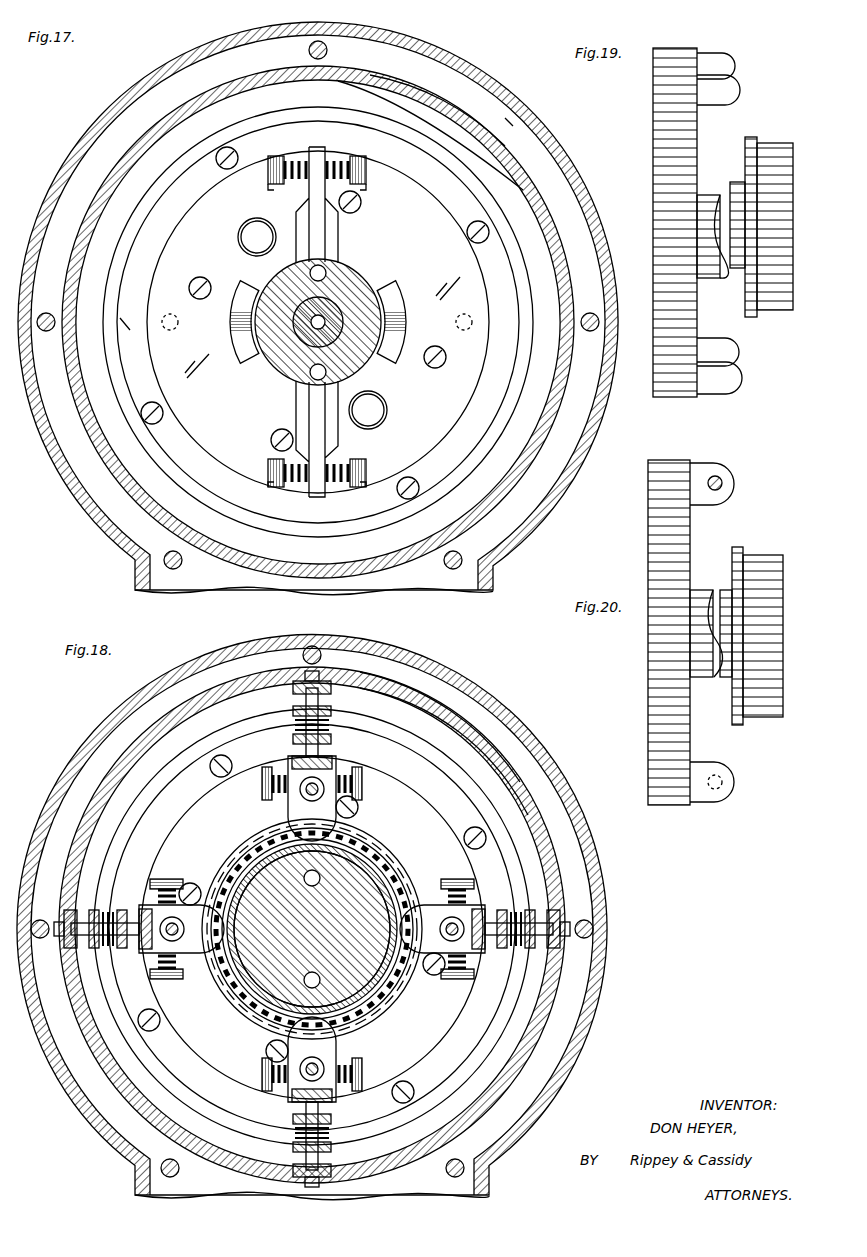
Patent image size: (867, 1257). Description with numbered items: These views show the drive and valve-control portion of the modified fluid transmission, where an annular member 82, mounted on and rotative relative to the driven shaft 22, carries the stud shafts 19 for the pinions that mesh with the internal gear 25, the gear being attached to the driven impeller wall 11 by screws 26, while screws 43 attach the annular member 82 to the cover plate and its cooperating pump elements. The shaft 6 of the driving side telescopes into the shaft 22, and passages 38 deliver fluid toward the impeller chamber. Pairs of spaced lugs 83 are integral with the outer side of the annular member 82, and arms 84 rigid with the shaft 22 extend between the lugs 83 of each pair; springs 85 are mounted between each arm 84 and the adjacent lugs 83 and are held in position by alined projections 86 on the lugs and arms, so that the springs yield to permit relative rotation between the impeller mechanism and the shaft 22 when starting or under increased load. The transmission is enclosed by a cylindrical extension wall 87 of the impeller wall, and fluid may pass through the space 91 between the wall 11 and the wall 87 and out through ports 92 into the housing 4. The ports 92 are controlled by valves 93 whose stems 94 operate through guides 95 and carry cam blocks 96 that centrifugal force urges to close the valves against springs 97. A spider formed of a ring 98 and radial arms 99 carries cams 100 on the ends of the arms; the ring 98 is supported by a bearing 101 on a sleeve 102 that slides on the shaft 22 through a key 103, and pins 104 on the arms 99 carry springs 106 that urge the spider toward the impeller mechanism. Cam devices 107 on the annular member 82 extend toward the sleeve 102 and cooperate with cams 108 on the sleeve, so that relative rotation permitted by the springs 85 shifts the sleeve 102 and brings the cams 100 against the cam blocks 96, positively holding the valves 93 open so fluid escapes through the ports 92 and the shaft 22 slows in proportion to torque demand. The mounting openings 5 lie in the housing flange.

In FIG. 17, the housing 4 is at (462, 70).
In FIG. 18, the housing 4 is at (500, 700).
In FIG. 17, the mounting hole 5 is at (329, 48).
In FIG. 18, the mounting hole 5 is at (596, 931).
In FIG. 17, the shaft 6 is at (332, 314).
In FIG. 17, the driven impeller wall 11 is at (542, 270).
In FIG. 18, the driven impeller wall 11 is at (520, 1030).
In FIG. 17, the stud shafts 19 is at (240, 236).
In FIG. 17, the shaft 22 is at (372, 303).
In FIG. 18, the shaft 22 is at (380, 975).
In FIG. 17, the internal gear 25 is at (497, 313).
In FIG. 18, the internal gear 25 is at (480, 1110).
In FIG. 17, the screws 26 is at (490, 235).
In FIG. 18, the screws 26 is at (410, 1102).
In FIG. 17, the passages 38 is at (322, 272).
In FIG. 18, the passages 38 is at (322, 878).
In FIG. 17, the screws 43 is at (201, 277).
In FIG. 18, the screws 43 is at (446, 965).
In FIG. 17, the annular member 82 is at (472, 290).
In FIG. 18, the annular member 82 is at (440, 1040).
In FIG. 19, the annular member 82 is at (662, 150).
In FIG. 20, the annular member 82 is at (656, 550).
In FIG. 17, the lugs 83 is at (270, 188).
In FIG. 18, the lugs 83 is at (262, 788).
In FIG. 19, the lugs 83 is at (738, 88).
In FIG. 20, the lugs 83 is at (736, 484).
In FIG. 17, the arms 84 is at (327, 231).
In FIG. 17, the springs 85 is at (296, 161).
In FIG. 18, the springs 85 is at (300, 770).
In FIG. 17, the projections 86 is at (268, 176).
In FIG. 17, the cylindrical extension wall 87 is at (505, 146).
In FIG. 18, the cylindrical extension wall 87 is at (520, 782).
In FIG. 17, the space 91 is at (525, 190).
In FIG. 18, the space 91 is at (528, 815).
In FIG. 18, the ports 92 is at (322, 690).
In FIG. 18, the valves 93 is at (322, 680).
In FIG. 18, the valve stems 94 is at (306, 712).
In FIG. 18, the guides 95 is at (335, 712).
In FIG. 18, the cam blocks 96 is at (305, 740).
In FIG. 18, the springs 97 is at (325, 720).
In FIG. 18, the ring 98 is at (228, 990).
In FIG. 18, the radial arms 99 is at (360, 809).
In FIG. 18, the cams 100 is at (340, 760).
In FIG. 18, the bearing 101 is at (382, 872).
In FIG. 18, the sleeve 102 is at (392, 884).
In FIG. 19, the sleeve 102 is at (783, 145).
In FIG. 20, the sleeve 102 is at (740, 722).
In FIG. 18, the key 103 is at (250, 858).
In FIG. 18, the pins 104 is at (340, 756).
In FIG. 18, the springs 106 is at (305, 796).
In FIG. 17, the cam devices 107 is at (239, 323).
In FIG. 19, the cam devices 107 is at (710, 195).
In FIG. 20, the cam devices 107 is at (694, 640).
In FIG. 19, the cams 108 is at (740, 220).
In FIG. 20, the cams 108 is at (725, 636).